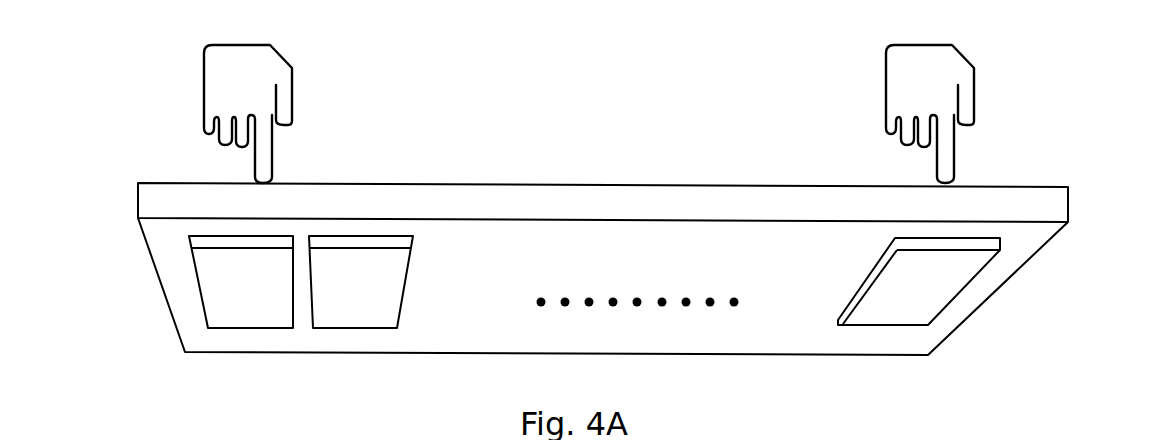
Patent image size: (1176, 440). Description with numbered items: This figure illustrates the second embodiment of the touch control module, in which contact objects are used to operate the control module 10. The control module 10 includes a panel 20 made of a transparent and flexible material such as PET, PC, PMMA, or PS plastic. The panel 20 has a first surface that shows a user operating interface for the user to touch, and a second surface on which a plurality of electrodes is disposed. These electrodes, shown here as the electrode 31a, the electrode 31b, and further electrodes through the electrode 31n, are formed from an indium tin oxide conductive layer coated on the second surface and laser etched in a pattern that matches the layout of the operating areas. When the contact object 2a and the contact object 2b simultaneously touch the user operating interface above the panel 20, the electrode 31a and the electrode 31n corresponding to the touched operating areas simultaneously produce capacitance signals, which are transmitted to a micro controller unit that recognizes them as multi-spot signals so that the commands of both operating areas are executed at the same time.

The contact object 2a is at (204, 73).
The contact object 2b is at (886, 73).
The control module 10 is at (1048, 112).
The panel 20 is at (138, 203).
The electrode 31a is at (210, 322).
The electrode 31b is at (397, 313).
The electrode 31n is at (927, 322).